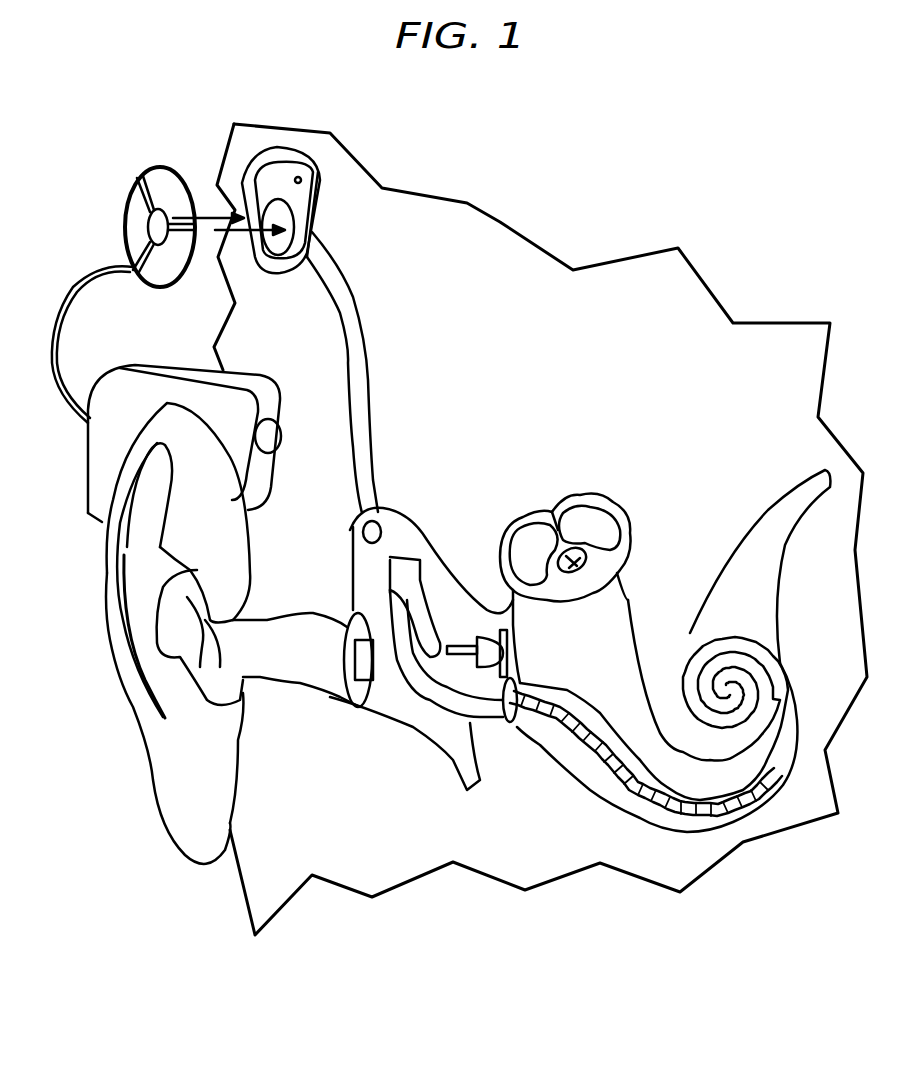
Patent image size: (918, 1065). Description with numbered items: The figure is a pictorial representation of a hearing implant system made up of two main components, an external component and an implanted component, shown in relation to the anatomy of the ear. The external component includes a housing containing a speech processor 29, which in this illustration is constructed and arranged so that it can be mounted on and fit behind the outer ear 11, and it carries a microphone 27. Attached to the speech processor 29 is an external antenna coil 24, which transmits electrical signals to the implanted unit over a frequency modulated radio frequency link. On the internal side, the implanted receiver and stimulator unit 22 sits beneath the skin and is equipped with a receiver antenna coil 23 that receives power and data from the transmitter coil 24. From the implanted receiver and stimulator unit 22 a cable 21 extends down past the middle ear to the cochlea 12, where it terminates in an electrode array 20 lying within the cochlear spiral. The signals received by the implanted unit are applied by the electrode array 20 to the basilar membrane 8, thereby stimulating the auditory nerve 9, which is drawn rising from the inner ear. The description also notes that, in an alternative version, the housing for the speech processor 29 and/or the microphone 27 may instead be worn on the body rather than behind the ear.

The basilar membrane 8 is at (553, 683).
The auditory nerve 9 is at (775, 512).
The outer ear 11 is at (180, 800).
The cochlea 12 is at (790, 708).
The electrode array 20 is at (623, 780).
The cable 21 is at (370, 393).
The implanted receiver and stimulator unit 22 is at (297, 228).
The receiver antenna coil 23 is at (298, 180).
The external antenna coil 24 is at (145, 220).
The microphone 27 is at (270, 440).
The speech processor 29 is at (98, 470).